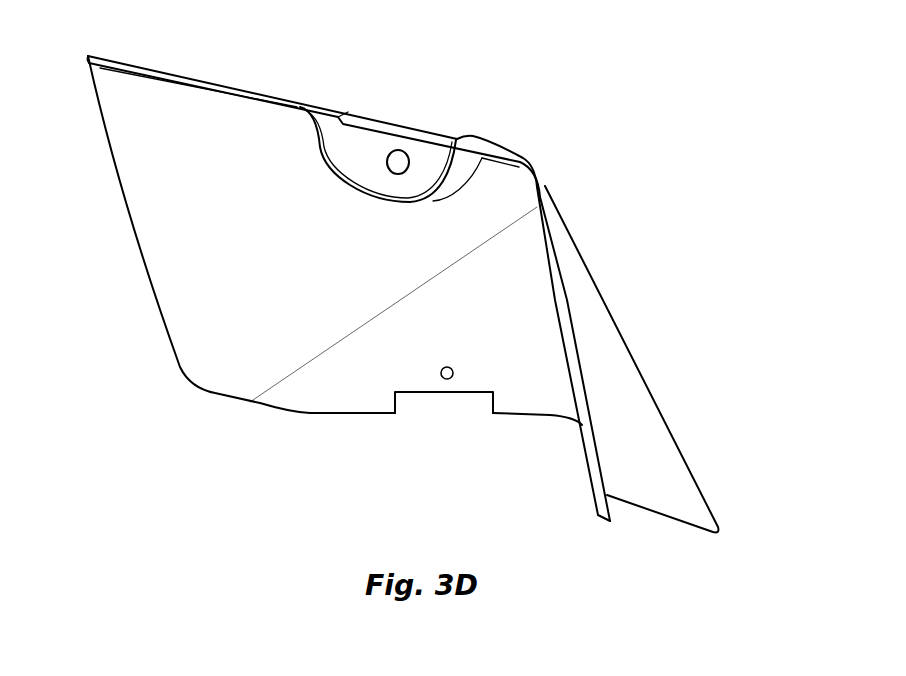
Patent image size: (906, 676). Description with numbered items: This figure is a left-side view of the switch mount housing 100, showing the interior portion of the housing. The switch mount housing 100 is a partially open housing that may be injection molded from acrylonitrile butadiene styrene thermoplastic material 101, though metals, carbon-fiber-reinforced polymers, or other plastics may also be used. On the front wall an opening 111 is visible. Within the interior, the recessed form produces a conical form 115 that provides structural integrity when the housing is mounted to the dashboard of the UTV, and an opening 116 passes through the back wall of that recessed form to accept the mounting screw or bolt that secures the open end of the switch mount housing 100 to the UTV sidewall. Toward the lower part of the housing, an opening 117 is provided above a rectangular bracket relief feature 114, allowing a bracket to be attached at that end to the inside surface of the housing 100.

The switch mount housing 100 is at (418, 281).
The acrylonitrile butadiene styrene thermoplastic material 101 is at (185, 206).
The opening 111 is at (660, 375).
The rectangular bracket relief feature 114 is at (448, 403).
The conical form 115 is at (455, 192).
The opening 116 is at (397, 175).
The opening 117 is at (455, 373).